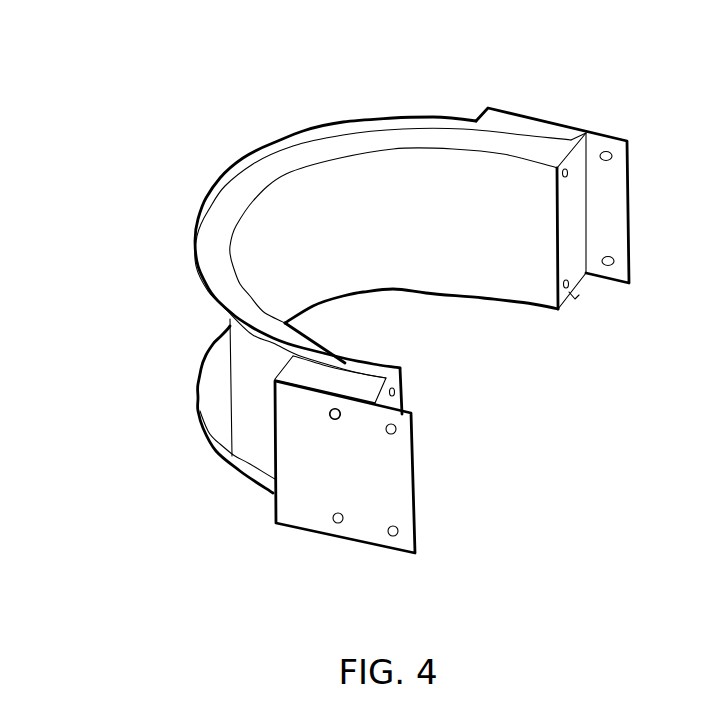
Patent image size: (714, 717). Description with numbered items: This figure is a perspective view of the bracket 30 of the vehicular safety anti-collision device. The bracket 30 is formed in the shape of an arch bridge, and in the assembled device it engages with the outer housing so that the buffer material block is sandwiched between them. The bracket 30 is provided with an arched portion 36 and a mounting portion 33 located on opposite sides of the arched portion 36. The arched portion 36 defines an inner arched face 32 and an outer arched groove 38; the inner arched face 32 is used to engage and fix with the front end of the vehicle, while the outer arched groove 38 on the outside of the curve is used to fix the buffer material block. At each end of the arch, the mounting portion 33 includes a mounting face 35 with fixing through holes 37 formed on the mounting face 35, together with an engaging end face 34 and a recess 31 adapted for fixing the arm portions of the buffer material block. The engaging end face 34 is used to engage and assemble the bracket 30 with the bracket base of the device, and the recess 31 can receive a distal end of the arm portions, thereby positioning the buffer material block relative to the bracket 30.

The bracket 30 is at (150, 46).
The recess 31 is at (127, 600).
The inner arched face 32 is at (420, 46).
The mounting portion 33 is at (277, 600).
The engaging end face 34 is at (672, 46).
The mounting face 35 is at (533, 600).
The arched portion 36 is at (562, 46).
The fixing through holes 37 is at (323, 410).
The outer arched groove 38 is at (227, 360).